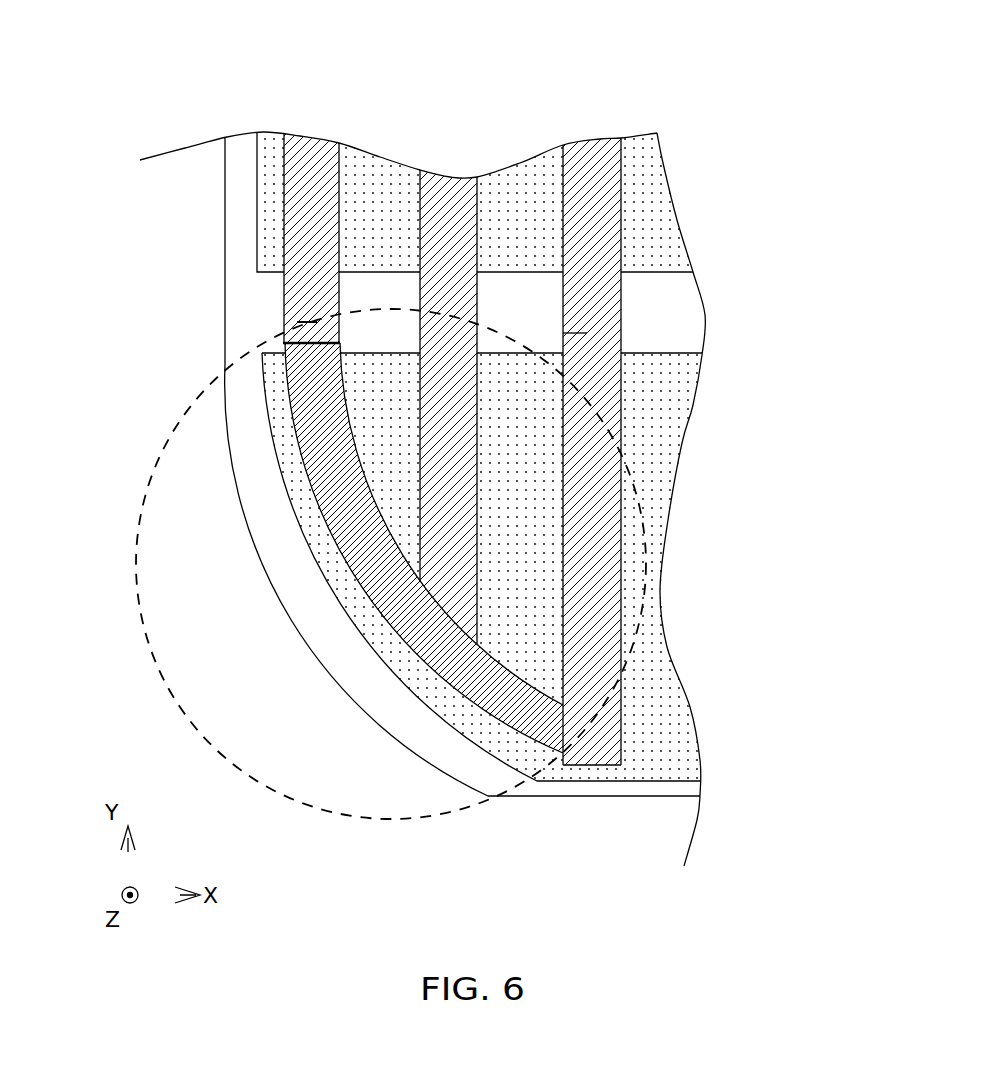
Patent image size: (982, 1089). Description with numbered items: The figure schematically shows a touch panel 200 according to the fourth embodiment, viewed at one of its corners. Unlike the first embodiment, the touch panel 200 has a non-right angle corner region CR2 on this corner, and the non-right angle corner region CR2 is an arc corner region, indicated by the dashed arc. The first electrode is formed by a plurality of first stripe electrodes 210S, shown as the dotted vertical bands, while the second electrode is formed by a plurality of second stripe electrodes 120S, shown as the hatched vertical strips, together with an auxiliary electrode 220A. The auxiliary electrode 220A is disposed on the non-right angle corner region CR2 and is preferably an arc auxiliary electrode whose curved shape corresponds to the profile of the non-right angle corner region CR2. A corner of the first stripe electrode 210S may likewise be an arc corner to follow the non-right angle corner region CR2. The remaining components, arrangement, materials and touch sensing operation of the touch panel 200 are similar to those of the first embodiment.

The touch panel 200 is at (694, 70).
The second stripe electrodes 120S is at (307, 237).
The first stripe electrodes 210S is at (650, 228).
The auxiliary electrode 220A is at (376, 612).
The non-right angle corner region CR2 is at (290, 799).